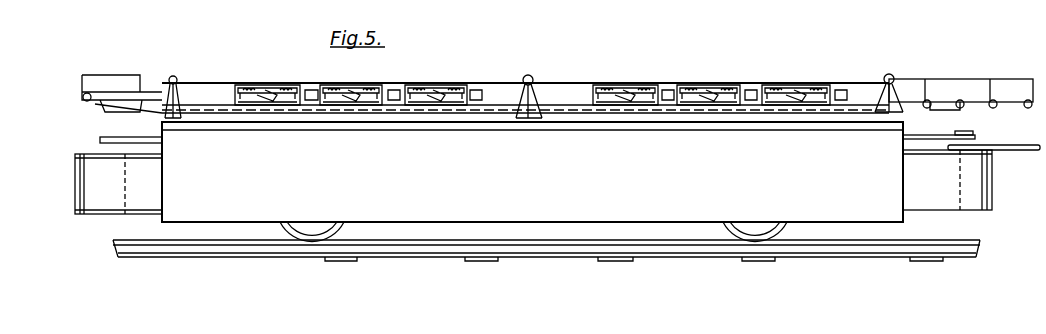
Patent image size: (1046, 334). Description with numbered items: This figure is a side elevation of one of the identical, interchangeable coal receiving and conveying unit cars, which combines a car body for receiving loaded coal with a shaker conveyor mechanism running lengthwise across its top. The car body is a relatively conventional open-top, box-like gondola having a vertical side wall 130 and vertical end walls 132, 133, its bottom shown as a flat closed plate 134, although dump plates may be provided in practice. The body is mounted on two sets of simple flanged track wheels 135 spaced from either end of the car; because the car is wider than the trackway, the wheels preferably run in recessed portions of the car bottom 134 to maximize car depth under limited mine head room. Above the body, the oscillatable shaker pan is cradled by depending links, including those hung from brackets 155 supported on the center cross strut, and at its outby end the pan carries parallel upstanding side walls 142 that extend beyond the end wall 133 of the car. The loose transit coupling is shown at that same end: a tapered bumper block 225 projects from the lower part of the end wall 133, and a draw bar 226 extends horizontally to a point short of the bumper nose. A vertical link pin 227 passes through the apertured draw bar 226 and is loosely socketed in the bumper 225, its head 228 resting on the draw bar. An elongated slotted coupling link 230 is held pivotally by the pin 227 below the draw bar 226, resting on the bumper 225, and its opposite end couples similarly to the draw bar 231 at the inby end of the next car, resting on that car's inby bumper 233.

The vertical side wall 130 is at (653, 202).
The vertical end wall 132 is at (162, 205).
The vertical end wall 133 is at (903, 198).
The flat closed plate 134 is at (555, 222).
The flanged track wheels 135 is at (285, 235).
The upstanding side walls 142 is at (900, 83).
The brackets 155 is at (528, 95).
The tapered bumper block 225 is at (985, 200).
The draw bar 226 is at (938, 137).
The link pin 227 is at (960, 172).
The head 228 is at (965, 131).
The coupling link 230 is at (994, 137).
The draw bar 231 is at (100, 138).
The inby bumper 233 is at (75, 190).